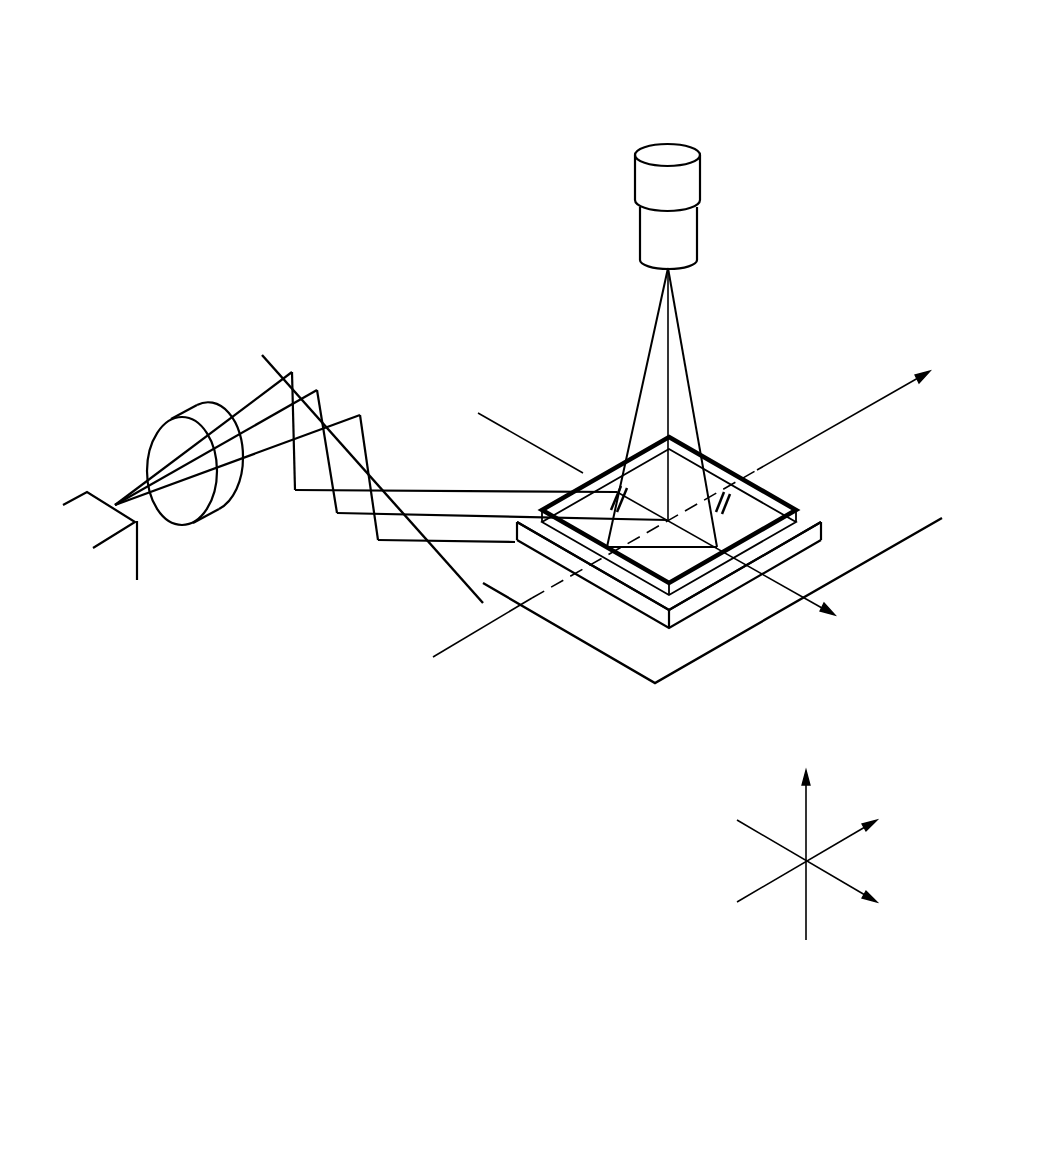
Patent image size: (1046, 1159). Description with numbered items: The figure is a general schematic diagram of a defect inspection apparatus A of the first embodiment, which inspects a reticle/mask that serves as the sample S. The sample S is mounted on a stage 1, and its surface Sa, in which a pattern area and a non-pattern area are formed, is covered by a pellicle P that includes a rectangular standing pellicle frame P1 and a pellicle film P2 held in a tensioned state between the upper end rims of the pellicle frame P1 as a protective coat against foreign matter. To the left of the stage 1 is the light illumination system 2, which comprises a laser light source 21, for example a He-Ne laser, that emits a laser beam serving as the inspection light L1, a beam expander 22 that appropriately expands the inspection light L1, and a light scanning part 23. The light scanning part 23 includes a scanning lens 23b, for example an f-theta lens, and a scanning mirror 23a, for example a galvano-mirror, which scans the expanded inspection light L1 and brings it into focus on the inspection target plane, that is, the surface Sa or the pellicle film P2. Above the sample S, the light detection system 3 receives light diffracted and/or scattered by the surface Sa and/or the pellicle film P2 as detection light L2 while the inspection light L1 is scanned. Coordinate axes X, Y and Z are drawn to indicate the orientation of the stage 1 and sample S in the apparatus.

The defect inspection apparatus A is at (438, 96).
The stage 1 is at (730, 674).
The light illumination system 2 is at (309, 305).
The light detection system 3 is at (603, 188).
The laser light source 21 is at (126, 575).
The beam expander 22 is at (108, 486).
The light scanning part 23 is at (315, 536).
The scanning mirror 23a is at (336, 538).
The scanning lens 23b is at (220, 526).
The inspection light L1 is at (510, 564).
The detection light L2 is at (708, 338).
The substrate P is at (723, 421).
The pellicle frame P1 is at (601, 446).
The pellicle film P2 is at (726, 488).
The sample S is at (825, 544).
The surface Sa is at (812, 508).
The X axis X is at (690, 667).
The Y axis Y is at (694, 624).
The Z axis Z is at (805, 840).